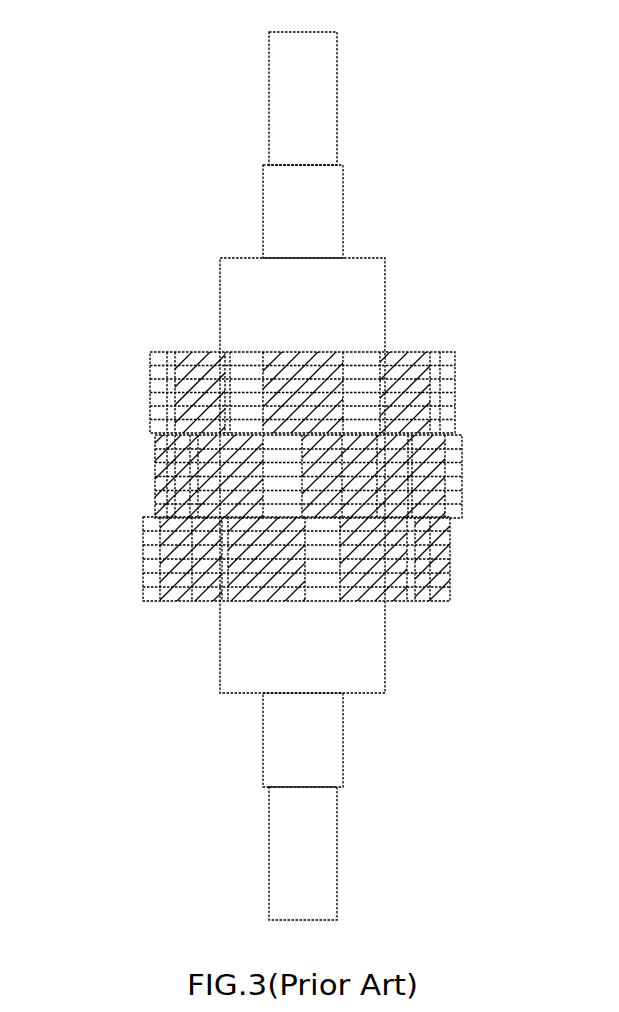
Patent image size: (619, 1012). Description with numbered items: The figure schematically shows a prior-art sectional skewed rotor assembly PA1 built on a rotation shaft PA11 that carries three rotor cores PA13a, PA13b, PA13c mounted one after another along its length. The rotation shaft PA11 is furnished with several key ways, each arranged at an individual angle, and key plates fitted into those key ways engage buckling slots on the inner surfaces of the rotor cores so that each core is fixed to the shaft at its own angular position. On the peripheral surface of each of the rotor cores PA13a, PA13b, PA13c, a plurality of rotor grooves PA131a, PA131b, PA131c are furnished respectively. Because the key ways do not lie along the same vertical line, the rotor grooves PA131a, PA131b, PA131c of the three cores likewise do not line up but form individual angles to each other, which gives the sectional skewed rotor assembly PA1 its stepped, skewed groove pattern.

The sectional skewed rotor assembly PA1 is at (486, 106).
The rotation shaft PA11 is at (323, 103).
The rotor core PA13a is at (309, 443).
The rotor core PA13b is at (309, 475).
The rotor core PA13c is at (309, 475).
The rotor grooves PA131a is at (247, 370).
The rotor grooves PA131b is at (273, 468).
The rotor grooves PA131c is at (310, 551).